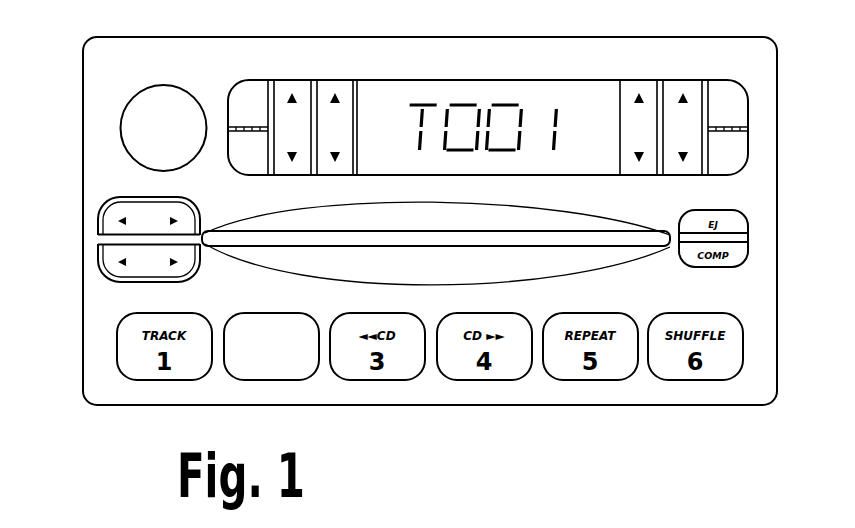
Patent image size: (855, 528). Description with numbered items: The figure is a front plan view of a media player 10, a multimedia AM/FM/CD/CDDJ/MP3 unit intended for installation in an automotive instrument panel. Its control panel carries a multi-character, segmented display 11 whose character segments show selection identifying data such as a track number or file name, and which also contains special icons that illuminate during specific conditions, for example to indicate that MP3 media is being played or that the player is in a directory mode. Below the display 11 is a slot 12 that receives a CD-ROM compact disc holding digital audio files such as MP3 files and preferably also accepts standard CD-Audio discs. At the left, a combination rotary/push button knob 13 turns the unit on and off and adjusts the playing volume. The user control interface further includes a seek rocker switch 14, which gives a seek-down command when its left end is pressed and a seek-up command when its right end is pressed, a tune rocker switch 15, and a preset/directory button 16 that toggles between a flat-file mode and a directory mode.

The media player 10 is at (655, 404).
The segmented display 11 is at (535, 90).
The slot 12 is at (627, 238).
The rotary/push button knob 13 is at (125, 112).
The seek rocker switch 14 is at (172, 208).
The tune rocker switch 15 is at (108, 267).
The preset/directory button 16 is at (252, 313).